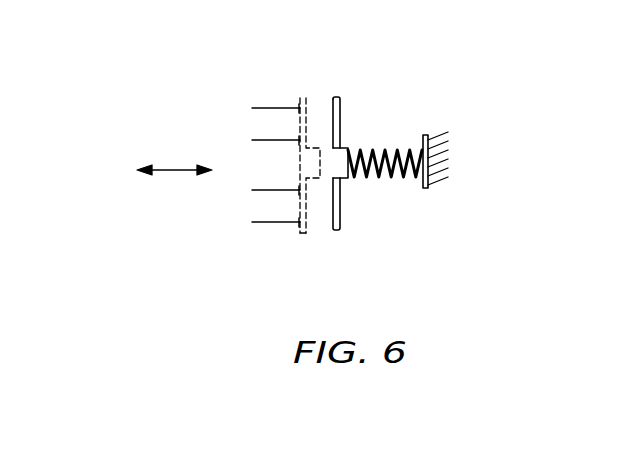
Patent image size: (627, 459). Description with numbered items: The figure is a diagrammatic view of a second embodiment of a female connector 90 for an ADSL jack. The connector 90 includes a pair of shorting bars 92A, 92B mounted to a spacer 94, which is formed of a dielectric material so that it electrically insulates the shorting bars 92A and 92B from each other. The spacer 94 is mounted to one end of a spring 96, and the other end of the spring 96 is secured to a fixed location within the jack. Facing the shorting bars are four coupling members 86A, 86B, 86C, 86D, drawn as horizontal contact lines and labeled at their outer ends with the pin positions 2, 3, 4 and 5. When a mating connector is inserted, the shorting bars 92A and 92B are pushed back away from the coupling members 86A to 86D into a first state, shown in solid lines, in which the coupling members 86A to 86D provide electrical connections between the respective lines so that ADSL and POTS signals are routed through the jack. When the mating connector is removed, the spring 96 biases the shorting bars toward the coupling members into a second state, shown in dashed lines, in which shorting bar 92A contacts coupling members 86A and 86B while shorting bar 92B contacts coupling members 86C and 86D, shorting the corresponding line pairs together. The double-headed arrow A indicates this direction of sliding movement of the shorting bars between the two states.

The female connector 90 is at (473, 135).
The shorting bar 92A is at (303, 97).
The shorting bar 92B is at (342, 217).
The spacer 94 is at (347, 148).
The spring 96 is at (395, 175).
The coupling member 86A is at (267, 108).
The coupling member 86B is at (252, 141).
The coupling member 86C is at (267, 190).
The coupling member 86D is at (272, 222).
The pin 2 is at (263, 112).
The pin 3 is at (263, 144).
The pin 4 is at (263, 190).
The pin 5 is at (263, 224).
The direction of slide movement A is at (160, 171).